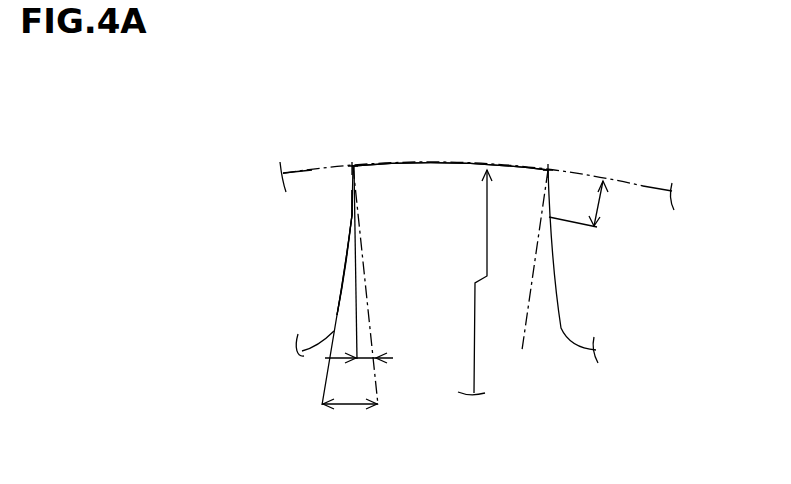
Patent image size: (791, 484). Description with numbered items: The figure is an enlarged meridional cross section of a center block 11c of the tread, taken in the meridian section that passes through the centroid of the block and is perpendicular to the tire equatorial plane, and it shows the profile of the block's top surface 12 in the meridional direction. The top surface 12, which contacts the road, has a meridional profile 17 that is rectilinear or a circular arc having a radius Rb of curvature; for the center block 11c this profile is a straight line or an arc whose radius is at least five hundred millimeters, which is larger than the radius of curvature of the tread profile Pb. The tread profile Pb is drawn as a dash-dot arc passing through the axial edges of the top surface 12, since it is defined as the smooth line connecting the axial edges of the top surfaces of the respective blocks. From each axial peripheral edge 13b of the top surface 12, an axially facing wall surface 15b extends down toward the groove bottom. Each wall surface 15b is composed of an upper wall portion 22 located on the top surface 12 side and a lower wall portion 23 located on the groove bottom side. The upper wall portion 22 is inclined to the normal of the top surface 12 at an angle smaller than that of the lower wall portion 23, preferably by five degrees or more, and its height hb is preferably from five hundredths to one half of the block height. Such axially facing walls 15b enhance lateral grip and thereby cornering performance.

The top surface 12 is at (463, 164).
The meridional profile 17 is at (408, 164).
The peripheral edge 13b is at (352, 163).
The center block 11c is at (447, 231).
The axially facing wall surface 15b is at (228, 221).
The upper wall portion 22 is at (352, 193).
The lower wall portion 23 is at (340, 282).
The tread profile Pb is at (644, 184).
The height of the upper wall portion hb is at (594, 204).
The radius of curvature Rb is at (474, 347).